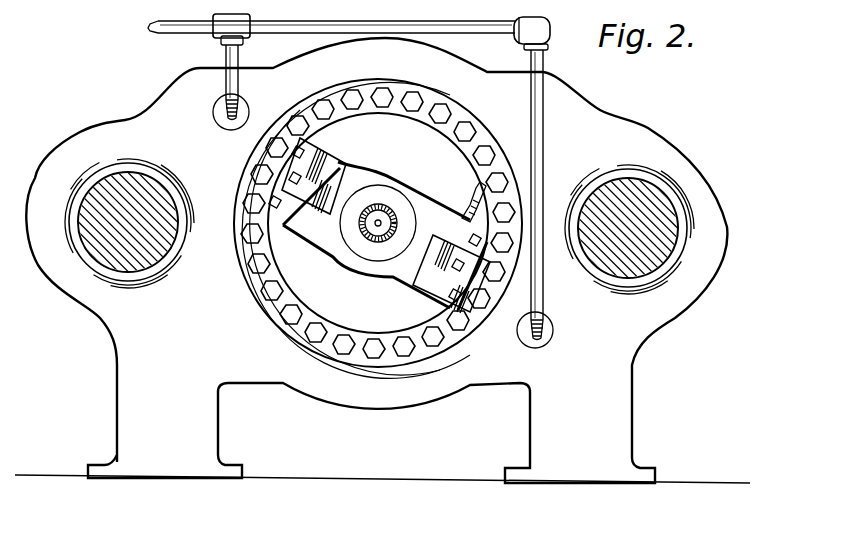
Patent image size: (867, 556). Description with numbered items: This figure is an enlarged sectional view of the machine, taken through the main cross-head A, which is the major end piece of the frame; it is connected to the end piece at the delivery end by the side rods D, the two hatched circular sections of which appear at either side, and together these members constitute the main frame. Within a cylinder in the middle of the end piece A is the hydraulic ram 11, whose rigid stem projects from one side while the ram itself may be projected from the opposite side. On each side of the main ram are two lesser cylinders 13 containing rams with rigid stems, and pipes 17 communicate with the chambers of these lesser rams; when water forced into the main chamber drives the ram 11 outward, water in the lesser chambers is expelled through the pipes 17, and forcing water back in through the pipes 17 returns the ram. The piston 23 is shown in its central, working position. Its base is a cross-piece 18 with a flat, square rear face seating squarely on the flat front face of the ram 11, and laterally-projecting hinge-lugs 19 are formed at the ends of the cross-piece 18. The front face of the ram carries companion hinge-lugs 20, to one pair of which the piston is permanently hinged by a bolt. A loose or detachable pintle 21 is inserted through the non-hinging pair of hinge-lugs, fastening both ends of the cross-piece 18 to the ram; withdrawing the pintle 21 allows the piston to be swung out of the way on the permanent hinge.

The main cross-head A is at (192, 293).
The side rods D is at (130, 270).
The hydraulic ram 11 is at (375, 240).
The lesser cylinders 13 is at (213, 118).
The pipes 17 is at (230, 58).
The cross-piece 18 is at (395, 176).
The hinge-lugs 19 is at (330, 170).
The companion hinge-lugs 20 is at (327, 200).
The loose pintle 21 is at (477, 192).
The piston 23 is at (363, 235).